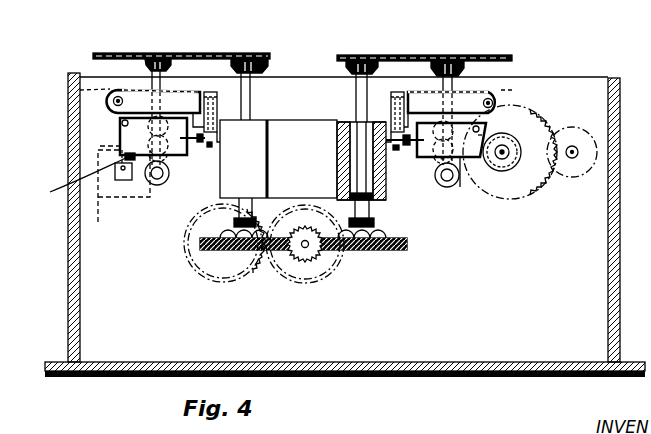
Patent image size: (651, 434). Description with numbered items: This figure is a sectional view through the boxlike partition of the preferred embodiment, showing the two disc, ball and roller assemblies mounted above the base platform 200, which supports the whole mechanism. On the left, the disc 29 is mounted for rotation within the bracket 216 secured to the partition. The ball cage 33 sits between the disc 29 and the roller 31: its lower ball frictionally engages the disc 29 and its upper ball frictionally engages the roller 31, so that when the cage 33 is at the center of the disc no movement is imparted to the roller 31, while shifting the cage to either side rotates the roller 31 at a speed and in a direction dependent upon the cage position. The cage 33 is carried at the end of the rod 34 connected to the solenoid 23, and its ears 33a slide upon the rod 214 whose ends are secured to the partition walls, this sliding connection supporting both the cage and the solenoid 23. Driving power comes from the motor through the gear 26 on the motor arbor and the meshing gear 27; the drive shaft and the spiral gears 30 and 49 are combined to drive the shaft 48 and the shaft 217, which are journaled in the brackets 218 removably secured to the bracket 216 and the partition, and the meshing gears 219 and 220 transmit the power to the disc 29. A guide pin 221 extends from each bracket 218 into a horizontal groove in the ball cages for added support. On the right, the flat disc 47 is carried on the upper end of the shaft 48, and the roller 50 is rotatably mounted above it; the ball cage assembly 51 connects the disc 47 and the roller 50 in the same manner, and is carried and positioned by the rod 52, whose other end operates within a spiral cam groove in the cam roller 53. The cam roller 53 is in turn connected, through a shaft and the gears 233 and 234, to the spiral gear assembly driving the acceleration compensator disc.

The base platform 200 is at (356, 378).
The meshing gear 220 is at (161, 52).
The meshing gear 219 is at (254, 56).
The bracket 218 is at (222, 188).
The shaft 217 is at (250, 100).
The bracket 216 is at (130, 97).
The disc 29 is at (80, 92).
The rod 214 is at (122, 123).
The ball cage 33 is at (184, 157).
The ear 33a is at (125, 145).
The rod 34 is at (74, 179).
The solenoid 23 is at (120, 195).
The roller 31 is at (156, 186).
The guide pin 221 is at (198, 143).
The flat disc 47 is at (515, 94).
The gear 234 is at (533, 114).
The gear 233 is at (575, 175).
The cam roller 53 is at (518, 160).
The rod 52 is at (462, 162).
The ball cage assembly 51 is at (433, 178).
The roller 50 is at (458, 186).
The shaft 48 is at (368, 217).
The spiral gear 49 is at (386, 251).
The spiral gear 30 is at (218, 252).
The gear 26 is at (249, 267).
The gear 27 is at (317, 270).